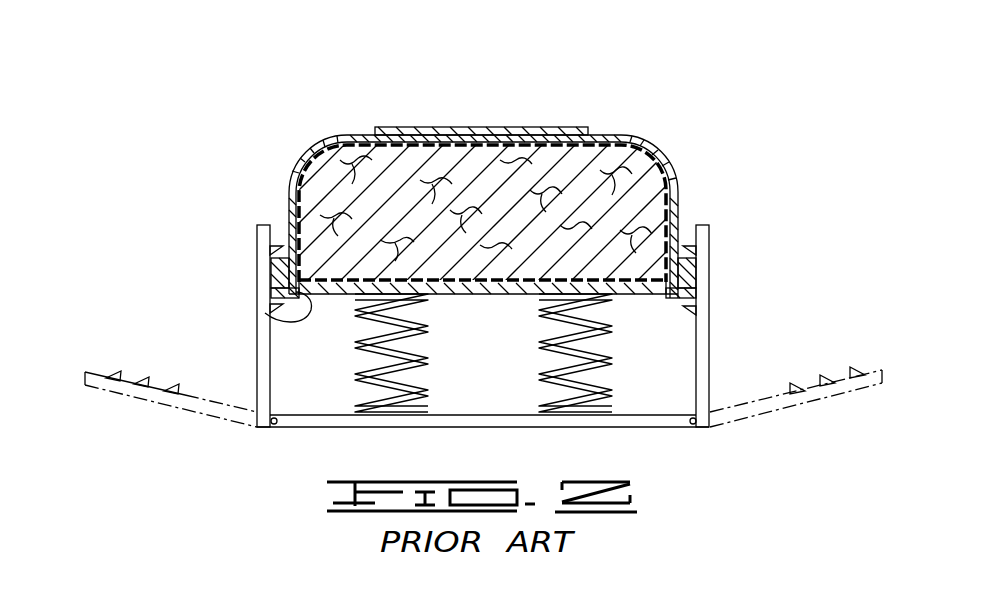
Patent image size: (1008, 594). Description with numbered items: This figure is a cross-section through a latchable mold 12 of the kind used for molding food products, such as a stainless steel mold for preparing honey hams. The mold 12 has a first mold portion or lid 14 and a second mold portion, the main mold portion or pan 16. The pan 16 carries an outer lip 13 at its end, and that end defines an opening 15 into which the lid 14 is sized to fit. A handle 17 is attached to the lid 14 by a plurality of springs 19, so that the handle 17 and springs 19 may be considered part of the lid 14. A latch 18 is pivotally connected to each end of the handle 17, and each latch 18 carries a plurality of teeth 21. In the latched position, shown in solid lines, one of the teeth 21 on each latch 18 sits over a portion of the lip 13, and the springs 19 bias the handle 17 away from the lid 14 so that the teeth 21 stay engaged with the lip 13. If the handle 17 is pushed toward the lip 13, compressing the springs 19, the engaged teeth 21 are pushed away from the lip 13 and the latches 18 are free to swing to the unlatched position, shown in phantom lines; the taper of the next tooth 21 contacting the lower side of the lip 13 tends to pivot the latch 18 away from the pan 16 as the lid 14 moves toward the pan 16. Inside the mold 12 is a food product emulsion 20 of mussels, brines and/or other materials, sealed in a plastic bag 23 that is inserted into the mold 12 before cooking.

The latchable mold 12 is at (517, 105).
The outer lip 13 is at (710, 293).
The first mold portion (lid) 14 is at (628, 290).
The opening 15 is at (265, 313).
The second mold portion (pan) 16 is at (672, 182).
The handle 17 is at (325, 430).
The latch 18 is at (162, 337).
The springs 19 is at (413, 352).
The food product emulsion 20 is at (597, 173).
The teeth 21 is at (280, 262).
The plastic bag 23 is at (350, 142).